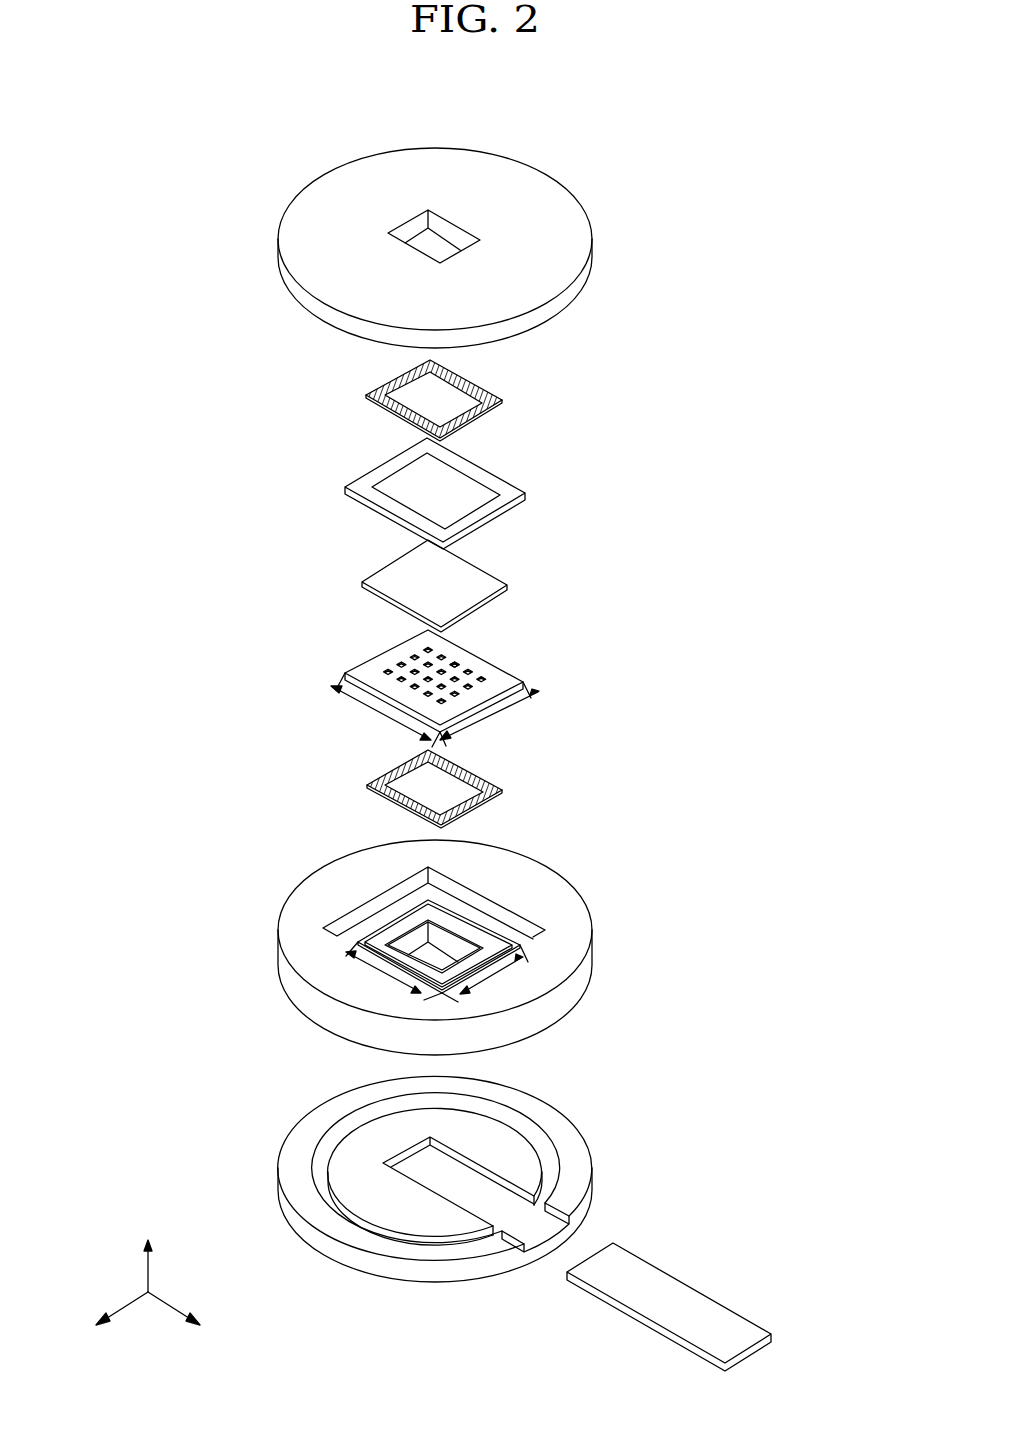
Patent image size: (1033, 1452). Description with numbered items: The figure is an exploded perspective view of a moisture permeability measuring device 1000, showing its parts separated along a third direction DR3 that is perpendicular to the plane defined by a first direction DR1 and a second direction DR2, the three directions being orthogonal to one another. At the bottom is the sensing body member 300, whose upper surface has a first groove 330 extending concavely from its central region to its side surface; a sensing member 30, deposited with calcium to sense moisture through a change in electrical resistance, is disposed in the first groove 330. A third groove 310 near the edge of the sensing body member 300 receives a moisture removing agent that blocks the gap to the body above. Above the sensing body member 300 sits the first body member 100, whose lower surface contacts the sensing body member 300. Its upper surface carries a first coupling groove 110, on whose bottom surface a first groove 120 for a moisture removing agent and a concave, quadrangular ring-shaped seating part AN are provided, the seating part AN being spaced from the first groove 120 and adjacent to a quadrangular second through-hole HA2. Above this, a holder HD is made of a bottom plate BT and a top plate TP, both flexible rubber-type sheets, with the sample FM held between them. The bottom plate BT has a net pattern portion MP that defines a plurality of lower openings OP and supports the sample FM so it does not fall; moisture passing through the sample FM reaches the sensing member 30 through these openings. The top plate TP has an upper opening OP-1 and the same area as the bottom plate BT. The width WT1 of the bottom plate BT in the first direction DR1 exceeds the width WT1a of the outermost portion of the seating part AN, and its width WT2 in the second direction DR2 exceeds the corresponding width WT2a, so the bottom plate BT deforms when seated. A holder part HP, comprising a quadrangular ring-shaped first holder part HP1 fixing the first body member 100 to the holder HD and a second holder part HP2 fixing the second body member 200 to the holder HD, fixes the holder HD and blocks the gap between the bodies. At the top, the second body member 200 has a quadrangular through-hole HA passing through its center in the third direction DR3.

The moisture permeability measuring device 1000 is at (655, 111).
The second body member 200 is at (592, 261).
The through-hole HA is at (433, 240).
The holder part HP is at (273, 386).
The first holder part HP1 is at (367, 785).
The second holder part HP2 is at (366, 395).
The holder HD is at (603, 485).
The top plate TP is at (525, 493).
The upper opening OP-1 is at (456, 496).
The sample FM is at (507, 585).
The bottom plate BT is at (524, 1000).
The net pattern portion MP is at (473, 678).
The lower opening OP is at (455, 665).
The width of the bottom plate in the first direction WT1 is at (489, 714).
The width of the bottom plate in the second direction WT2 is at (385, 710).
The first body member 100 is at (586, 965).
The first coupling groove 110 is at (518, 918).
The first groove 120 is at (530, 942).
The seating part AN is at (478, 943).
The second through-hole HA2 is at (445, 947).
The width of the outermost portion of the seating part in the first direction WT1a is at (492, 973).
The width of the outermost portion of the seating part in the second direction WT2a is at (388, 971).
The sensing body member 300 is at (590, 1195).
The third groove 310 is at (547, 1167).
The first groove 330 is at (477, 1185).
The sensing member 30 is at (712, 1317).
The first direction DR1 is at (100, 1318).
The second direction DR2 is at (198, 1318).
The third direction DR3 is at (145, 1248).